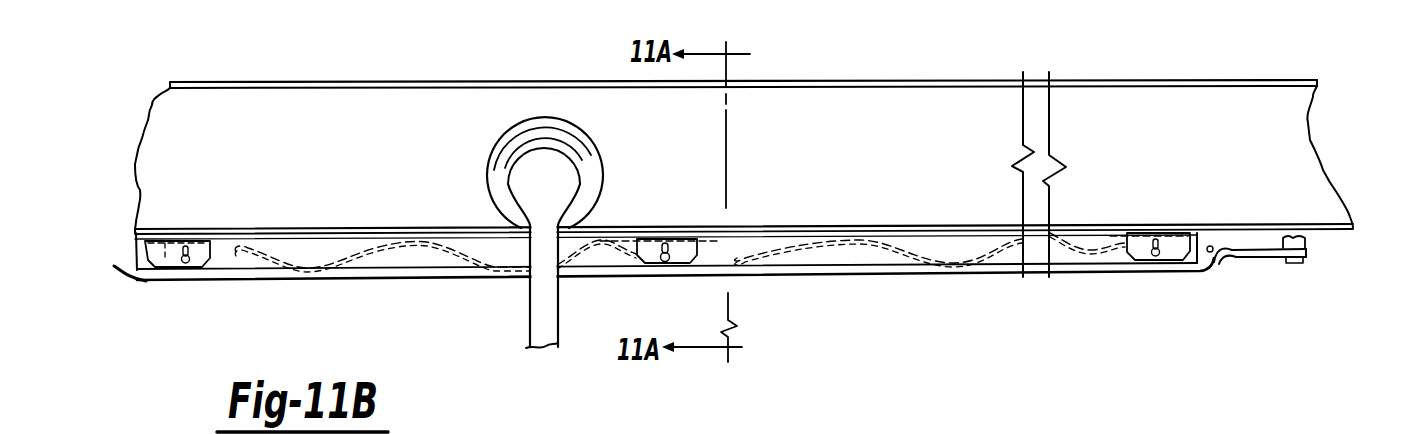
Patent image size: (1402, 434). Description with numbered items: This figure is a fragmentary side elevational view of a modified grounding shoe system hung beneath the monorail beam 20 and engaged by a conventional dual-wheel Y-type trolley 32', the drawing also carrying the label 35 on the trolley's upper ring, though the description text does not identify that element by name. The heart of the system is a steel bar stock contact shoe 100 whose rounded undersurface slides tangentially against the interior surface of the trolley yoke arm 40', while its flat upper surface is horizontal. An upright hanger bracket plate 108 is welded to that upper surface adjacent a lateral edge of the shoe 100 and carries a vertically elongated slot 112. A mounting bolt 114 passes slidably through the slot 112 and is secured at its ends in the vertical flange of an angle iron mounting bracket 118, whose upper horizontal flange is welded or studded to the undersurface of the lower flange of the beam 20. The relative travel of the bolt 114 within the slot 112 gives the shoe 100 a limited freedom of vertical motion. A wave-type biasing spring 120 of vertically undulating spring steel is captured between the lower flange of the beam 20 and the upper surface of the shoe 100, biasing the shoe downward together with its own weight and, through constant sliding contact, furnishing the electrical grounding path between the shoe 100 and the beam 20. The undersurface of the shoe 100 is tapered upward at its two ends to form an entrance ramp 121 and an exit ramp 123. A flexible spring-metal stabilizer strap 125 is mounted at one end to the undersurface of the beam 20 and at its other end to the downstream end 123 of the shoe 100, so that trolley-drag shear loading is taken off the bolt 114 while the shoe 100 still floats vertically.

The monorail beam 20 is at (1091, 72).
The dual-wheel Y-type trolley 32' is at (508, 328).
The hanger ring 35 is at (592, 150).
The trolley yoke arm 40' is at (568, 265).
The contact shoe 100 is at (1059, 282).
The hanger bracket plate 108 is at (843, 262).
The vertically elongated slot 112 is at (662, 242).
The mounting bolt 114 is at (664, 263).
The angle iron mounting bracket 118 is at (207, 268).
The biasing spring 120 is at (379, 270).
The entrance ramp 121 is at (113, 272).
The exit ramp 123 is at (1207, 265).
The stabilizer strap 125 is at (1265, 270).